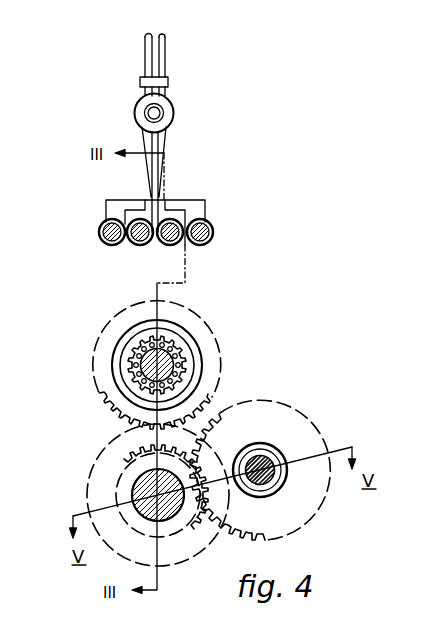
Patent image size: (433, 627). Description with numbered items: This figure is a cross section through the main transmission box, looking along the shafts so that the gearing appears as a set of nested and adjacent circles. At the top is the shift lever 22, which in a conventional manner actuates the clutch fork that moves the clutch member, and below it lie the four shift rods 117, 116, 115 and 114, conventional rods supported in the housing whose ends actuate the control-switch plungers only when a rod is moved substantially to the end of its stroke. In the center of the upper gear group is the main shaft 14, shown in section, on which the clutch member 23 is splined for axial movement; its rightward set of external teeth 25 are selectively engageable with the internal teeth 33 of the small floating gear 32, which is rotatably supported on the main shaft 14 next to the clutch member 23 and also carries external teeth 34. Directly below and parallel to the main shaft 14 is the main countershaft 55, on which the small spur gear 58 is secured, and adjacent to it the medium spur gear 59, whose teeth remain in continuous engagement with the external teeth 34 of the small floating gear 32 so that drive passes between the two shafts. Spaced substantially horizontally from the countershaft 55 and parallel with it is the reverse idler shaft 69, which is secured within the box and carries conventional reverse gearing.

The shift lever 22 is at (150, 143).
The shift rod 117 is at (98, 233).
The shift rod 116 is at (130, 243).
The shift rod 115 is at (163, 245).
The shift rod 114 is at (210, 237).
The small floating gear 32 is at (107, 322).
The external teeth 34 is at (98, 390).
The clutch member 23 is at (180, 333).
The internal teeth 33 is at (122, 368).
The rightward external teeth 25 is at (192, 370).
The main shaft 14 is at (175, 357).
The main countershaft 55 is at (138, 478).
The small spur gear 58 is at (120, 483).
The medium spur gear 59 is at (182, 540).
The reverse idler shaft 69 is at (255, 452).